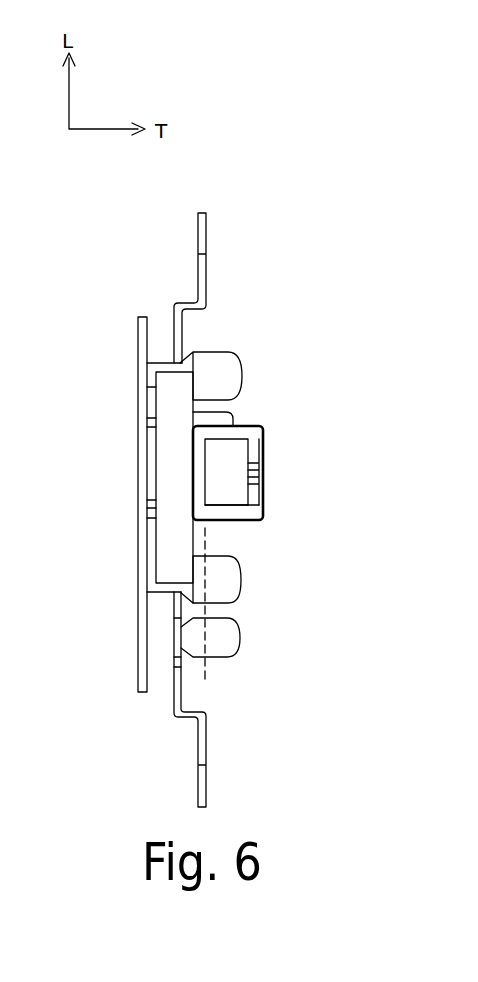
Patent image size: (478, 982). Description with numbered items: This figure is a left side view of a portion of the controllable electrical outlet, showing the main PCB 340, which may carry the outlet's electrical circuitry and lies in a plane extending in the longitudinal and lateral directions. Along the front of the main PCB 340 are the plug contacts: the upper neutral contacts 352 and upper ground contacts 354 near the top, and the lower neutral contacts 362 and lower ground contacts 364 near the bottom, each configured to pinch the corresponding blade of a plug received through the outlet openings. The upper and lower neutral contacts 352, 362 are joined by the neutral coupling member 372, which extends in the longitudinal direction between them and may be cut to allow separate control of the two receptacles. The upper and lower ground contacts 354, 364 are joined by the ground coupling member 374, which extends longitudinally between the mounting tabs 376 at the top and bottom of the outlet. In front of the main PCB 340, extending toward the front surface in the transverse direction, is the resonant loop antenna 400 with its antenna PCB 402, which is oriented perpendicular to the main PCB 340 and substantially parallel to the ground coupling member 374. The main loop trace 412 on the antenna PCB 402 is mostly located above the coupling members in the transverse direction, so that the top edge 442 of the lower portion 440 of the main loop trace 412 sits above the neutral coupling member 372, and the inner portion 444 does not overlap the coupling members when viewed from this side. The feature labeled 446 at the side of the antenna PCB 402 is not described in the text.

The mounting plate 340 is at (137, 342).
The upper contact 352 is at (225, 368).
The contact bump 354 is at (228, 420).
The lower contact 362 is at (223, 588).
The lower contact 364 is at (228, 643).
The upper bracket 372 is at (172, 407).
The lower bracket 374 is at (173, 600).
The mounting tab 376 is at (207, 240).
The module housing assembly 400 is at (250, 524).
The housing body 402 is at (263, 447).
The housing corner 412 is at (252, 507).
The inner cavity frame 440 is at (197, 455).
The housing bottom wall 442 is at (262, 518).
The cavity 444 is at (227, 483).
The side channel 446 is at (263, 496).